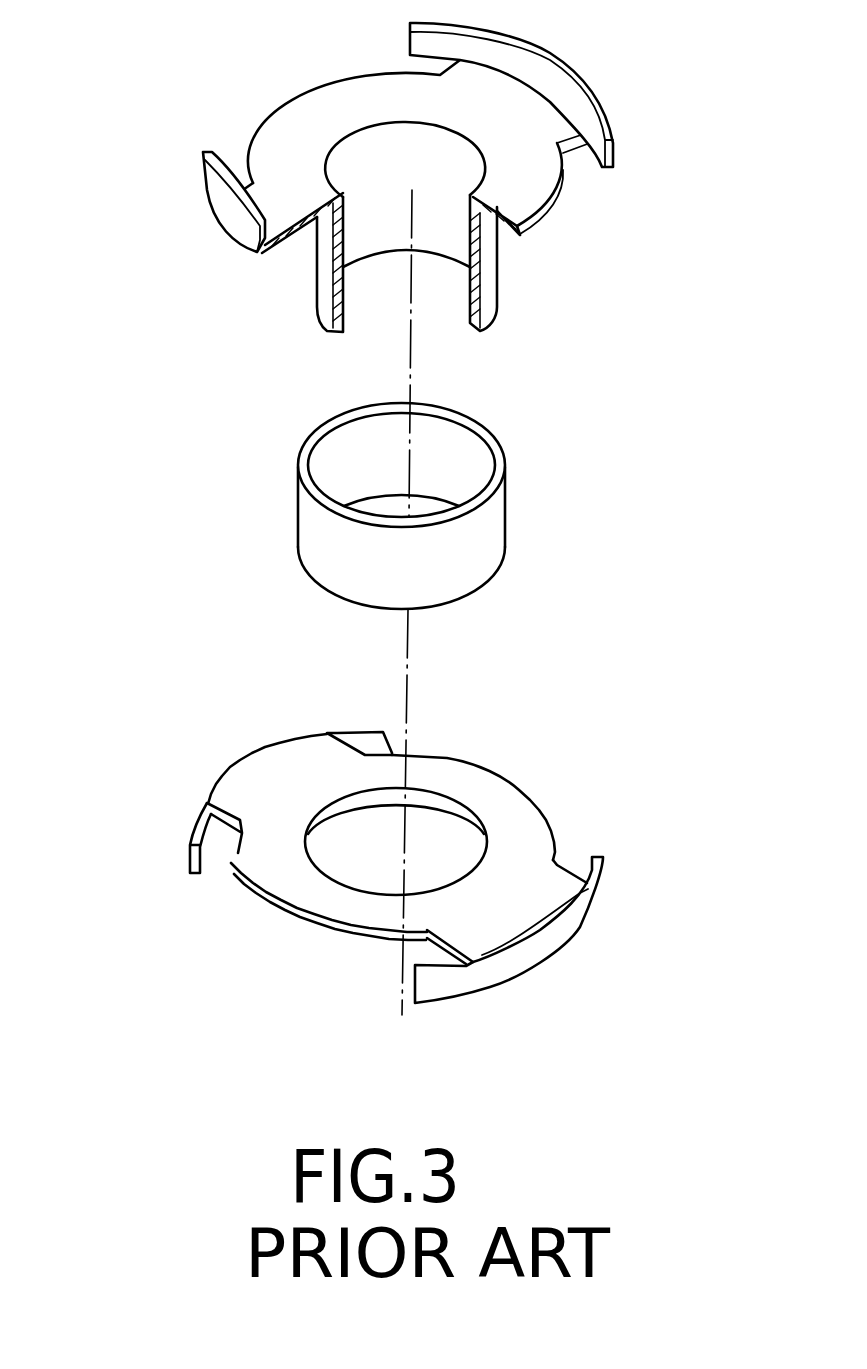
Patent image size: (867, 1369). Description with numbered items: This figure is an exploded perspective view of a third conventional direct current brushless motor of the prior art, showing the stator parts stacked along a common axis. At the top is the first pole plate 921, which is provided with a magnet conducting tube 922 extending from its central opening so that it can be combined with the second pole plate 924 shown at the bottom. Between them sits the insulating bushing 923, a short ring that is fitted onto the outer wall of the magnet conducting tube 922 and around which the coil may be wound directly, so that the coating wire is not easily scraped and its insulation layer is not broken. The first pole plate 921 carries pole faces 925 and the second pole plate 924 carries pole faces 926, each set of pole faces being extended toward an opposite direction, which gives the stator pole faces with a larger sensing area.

The first pole plate 921 is at (537, 193).
The magnet conducting tube 922 is at (490, 273).
The insulating bushing 923 is at (505, 470).
The second pole plate 924 is at (508, 795).
The pole faces 925 is at (583, 80).
The pole faces 926 is at (573, 947).